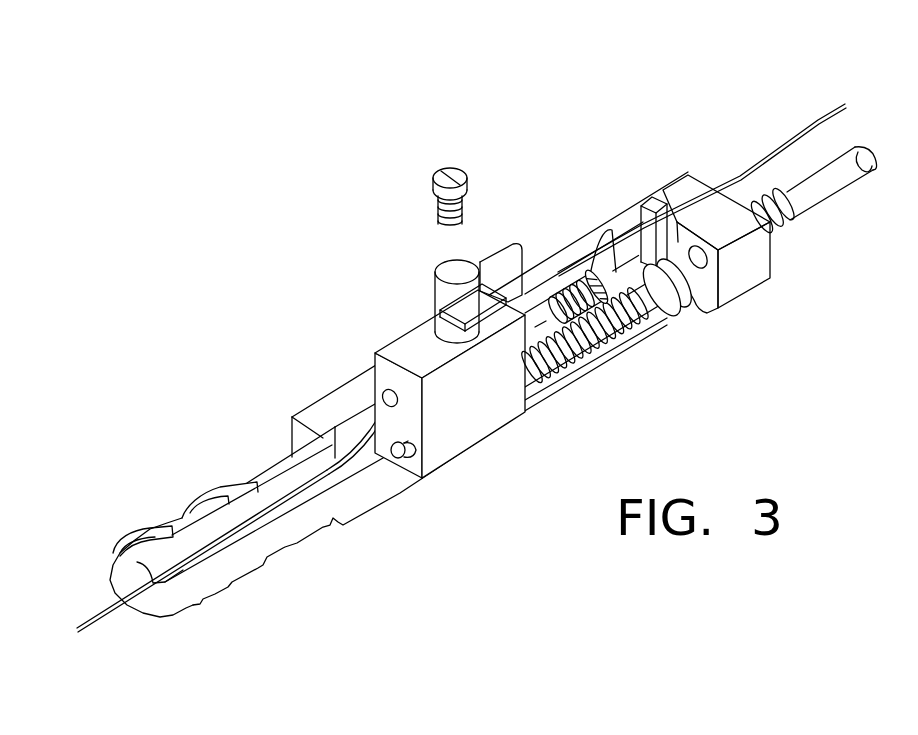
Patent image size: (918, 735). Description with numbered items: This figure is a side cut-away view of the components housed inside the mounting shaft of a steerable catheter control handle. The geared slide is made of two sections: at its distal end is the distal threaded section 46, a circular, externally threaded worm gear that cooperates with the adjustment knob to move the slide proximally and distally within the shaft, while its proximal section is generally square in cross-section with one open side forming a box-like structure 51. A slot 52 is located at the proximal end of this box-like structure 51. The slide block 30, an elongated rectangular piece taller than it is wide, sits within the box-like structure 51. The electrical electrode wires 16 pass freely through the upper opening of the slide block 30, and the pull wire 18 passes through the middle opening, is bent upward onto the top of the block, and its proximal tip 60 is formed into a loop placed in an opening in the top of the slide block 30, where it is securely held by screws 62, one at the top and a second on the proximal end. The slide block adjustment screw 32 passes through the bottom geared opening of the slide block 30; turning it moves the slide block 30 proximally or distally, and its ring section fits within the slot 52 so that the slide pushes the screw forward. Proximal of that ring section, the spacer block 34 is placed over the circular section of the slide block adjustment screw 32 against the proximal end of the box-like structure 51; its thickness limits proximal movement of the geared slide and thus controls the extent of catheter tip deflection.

The electrical electrode wires 16 is at (767, 152).
The pull wire 18 is at (335, 472).
The slide block 30 is at (465, 437).
The slide block adjustment screw 32 is at (583, 350).
The spacer block 34 is at (743, 273).
The distal threaded section 46 is at (172, 522).
The box-like structure 51 is at (578, 226).
The slot 52 is at (636, 210).
The proximal tip of the pull wire 60 is at (437, 267).
The screws 62 is at (456, 342).